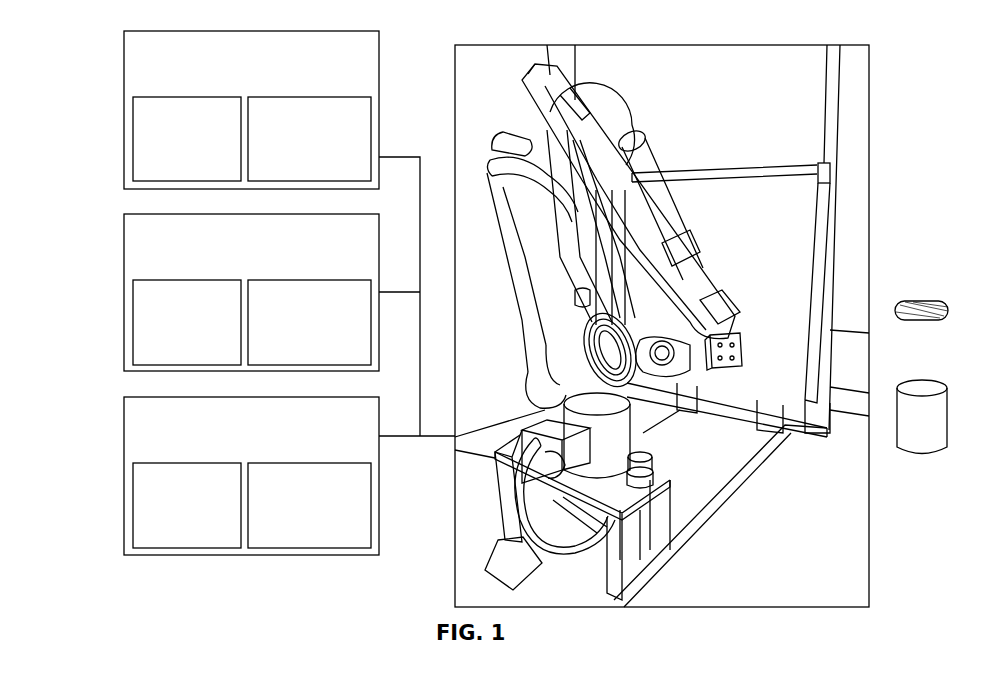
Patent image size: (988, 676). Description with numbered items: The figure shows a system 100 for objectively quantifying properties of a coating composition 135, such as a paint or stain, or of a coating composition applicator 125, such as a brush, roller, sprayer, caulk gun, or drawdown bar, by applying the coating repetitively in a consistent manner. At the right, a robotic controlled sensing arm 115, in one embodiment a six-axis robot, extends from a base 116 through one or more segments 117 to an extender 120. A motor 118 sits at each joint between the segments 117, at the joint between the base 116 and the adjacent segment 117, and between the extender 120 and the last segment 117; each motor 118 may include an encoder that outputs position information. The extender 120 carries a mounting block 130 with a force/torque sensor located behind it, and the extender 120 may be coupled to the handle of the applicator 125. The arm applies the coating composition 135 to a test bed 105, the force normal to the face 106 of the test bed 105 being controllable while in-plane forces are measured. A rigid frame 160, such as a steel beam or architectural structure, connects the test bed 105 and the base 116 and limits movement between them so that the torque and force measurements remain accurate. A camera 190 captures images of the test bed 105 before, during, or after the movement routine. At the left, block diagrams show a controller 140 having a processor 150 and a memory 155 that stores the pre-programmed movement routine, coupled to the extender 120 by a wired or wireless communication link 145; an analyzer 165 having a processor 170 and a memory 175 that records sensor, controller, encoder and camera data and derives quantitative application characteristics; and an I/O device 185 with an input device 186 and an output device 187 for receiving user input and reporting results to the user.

The system 100 is at (92, 44).
The test bed 105 is at (824, 163).
The face of test bed 106 is at (740, 178).
The controlled sensing arm 115 is at (512, 134).
The base 116 is at (510, 497).
The segment 117 is at (598, 126).
The motor 118 is at (573, 107).
The extender 120 is at (690, 370).
The coating composition applicator 125 is at (921, 311).
The mounting block 130 is at (745, 360).
The coating composition 135 is at (922, 417).
The controller 140 is at (251, 292).
The communication link 145 is at (437, 437).
The processor 150 is at (187, 322).
The memory 155 is at (309, 322).
The rigid frame 160 is at (740, 470).
The analyzer 165 is at (251, 110).
The processor 170 is at (187, 139).
The memory 175 is at (309, 139).
The input/output (I/O) device 185 is at (251, 476).
The input device 186 is at (187, 505).
The output device 187 is at (309, 505).
The camera 190 is at (590, 300).